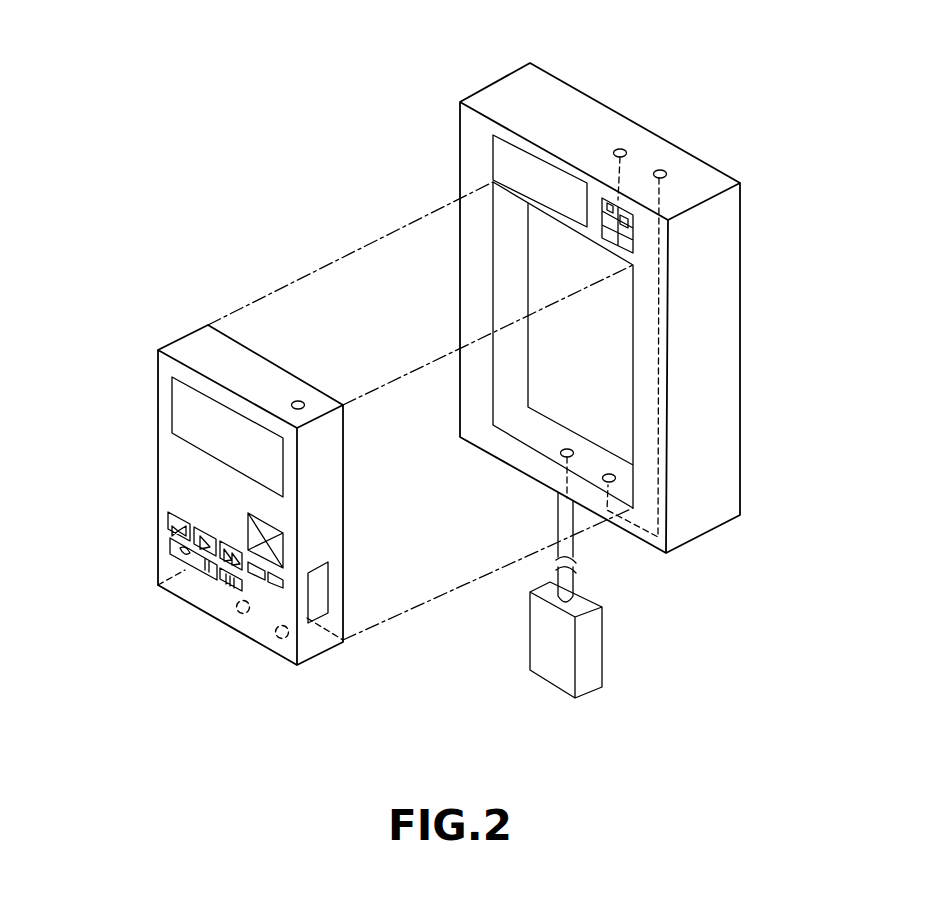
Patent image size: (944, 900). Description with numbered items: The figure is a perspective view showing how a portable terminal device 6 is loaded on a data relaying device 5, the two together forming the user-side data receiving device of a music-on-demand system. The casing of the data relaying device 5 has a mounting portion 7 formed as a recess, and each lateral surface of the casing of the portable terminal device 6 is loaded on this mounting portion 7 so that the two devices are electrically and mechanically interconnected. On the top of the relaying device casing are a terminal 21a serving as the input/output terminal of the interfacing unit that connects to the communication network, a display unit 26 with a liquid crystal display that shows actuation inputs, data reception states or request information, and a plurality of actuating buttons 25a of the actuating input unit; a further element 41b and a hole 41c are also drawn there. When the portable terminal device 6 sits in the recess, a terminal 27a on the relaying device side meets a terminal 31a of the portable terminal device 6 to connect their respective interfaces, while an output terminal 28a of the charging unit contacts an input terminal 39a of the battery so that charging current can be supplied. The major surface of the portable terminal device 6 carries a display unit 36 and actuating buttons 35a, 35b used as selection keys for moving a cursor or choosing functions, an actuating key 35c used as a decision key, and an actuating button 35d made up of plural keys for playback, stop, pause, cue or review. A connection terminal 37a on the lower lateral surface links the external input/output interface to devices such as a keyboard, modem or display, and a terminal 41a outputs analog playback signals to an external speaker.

The data relaying device 5 is at (470, 78).
The portable terminal device 6 is at (158, 330).
The mounting portion 7 is at (507, 250).
The display unit 26 is at (528, 172).
The hole 41c is at (620, 148).
The actuating buttons 25a is at (604, 203).
The terminal 21a is at (668, 170).
The terminal block 41b is at (604, 203).
The terminal 41a is at (300, 402).
The display unit 36 is at (180, 408).
The actuating button 35d is at (150, 524).
The actuating key 35c is at (273, 523).
The actuating button 35a is at (257, 582).
The actuating button 35b is at (272, 590).
The connection terminal 37a is at (320, 583).
The input terminal 39a is at (238, 612).
The terminal 31a is at (283, 642).
The output terminal 28a is at (557, 456).
The terminal 27a is at (612, 484).